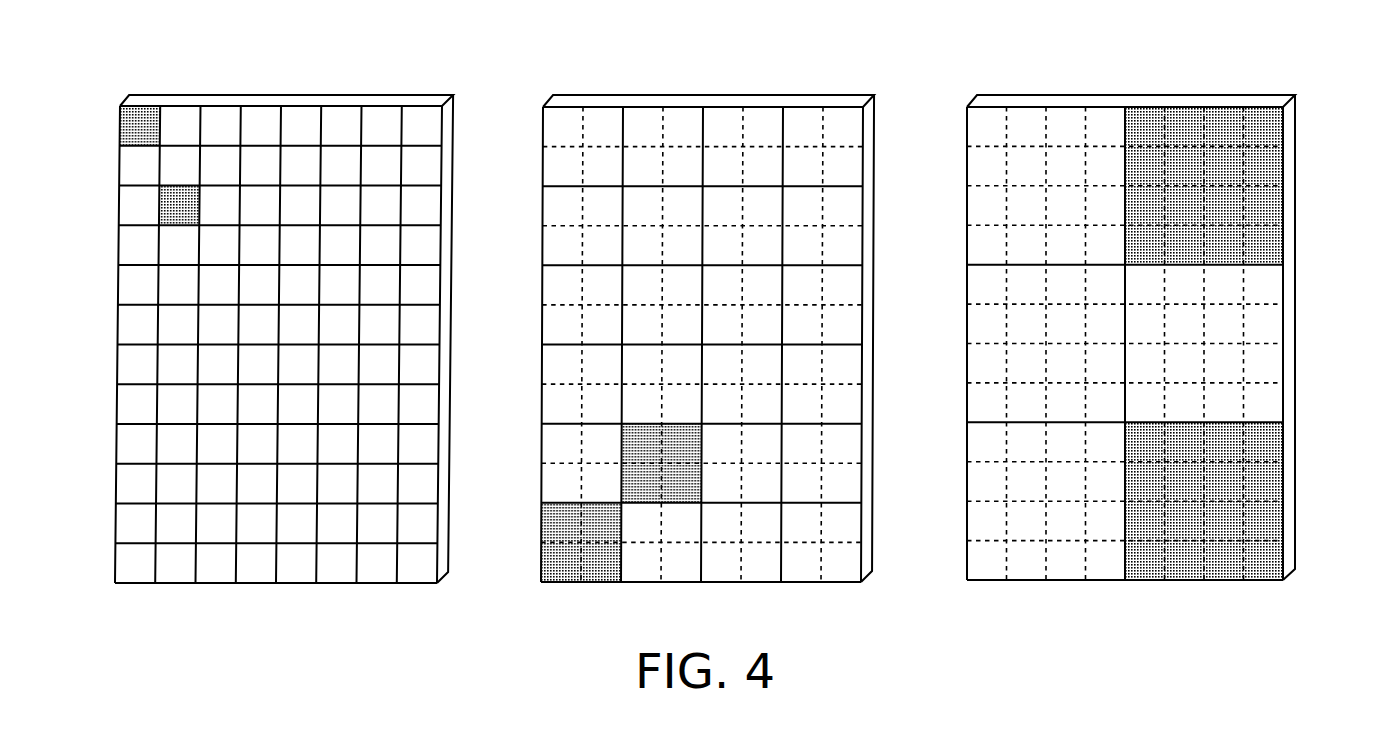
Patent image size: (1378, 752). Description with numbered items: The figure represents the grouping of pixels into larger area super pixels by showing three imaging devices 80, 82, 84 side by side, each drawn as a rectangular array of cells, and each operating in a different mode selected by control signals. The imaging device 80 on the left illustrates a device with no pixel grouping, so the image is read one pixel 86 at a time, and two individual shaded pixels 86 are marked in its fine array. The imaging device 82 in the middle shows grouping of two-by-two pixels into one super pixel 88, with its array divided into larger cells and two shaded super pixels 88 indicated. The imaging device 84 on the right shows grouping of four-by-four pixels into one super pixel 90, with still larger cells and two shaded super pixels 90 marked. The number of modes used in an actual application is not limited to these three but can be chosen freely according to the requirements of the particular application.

The imaging device 80 is at (255, 312).
The imaging device 82 is at (707, 341).
The imaging device 84 is at (1162, 311).
The pixel 86 is at (168, 207).
The super pixel 88 is at (672, 485).
The super pixel 90 is at (1230, 435).